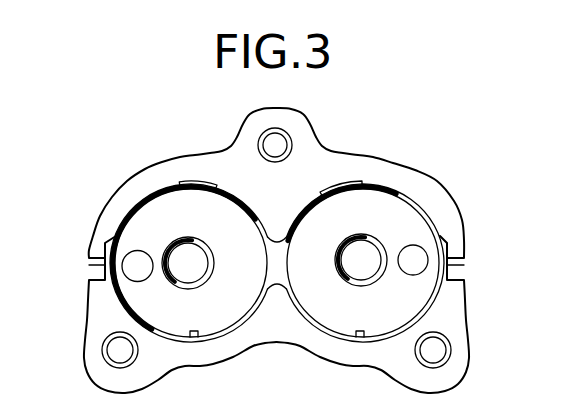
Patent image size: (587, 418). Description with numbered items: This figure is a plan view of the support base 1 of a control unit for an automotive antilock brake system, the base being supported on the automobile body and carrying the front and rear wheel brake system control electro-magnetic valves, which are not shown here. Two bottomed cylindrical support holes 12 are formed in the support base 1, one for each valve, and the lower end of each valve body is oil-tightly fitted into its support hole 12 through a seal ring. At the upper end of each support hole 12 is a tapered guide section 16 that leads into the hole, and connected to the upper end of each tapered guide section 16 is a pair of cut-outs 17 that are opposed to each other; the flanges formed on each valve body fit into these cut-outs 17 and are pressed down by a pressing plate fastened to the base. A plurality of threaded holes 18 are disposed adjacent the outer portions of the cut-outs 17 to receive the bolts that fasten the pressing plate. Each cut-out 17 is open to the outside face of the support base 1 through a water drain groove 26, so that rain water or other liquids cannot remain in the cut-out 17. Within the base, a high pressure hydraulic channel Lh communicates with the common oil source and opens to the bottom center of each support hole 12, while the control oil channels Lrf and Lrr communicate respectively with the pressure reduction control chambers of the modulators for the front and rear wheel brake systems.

The support base 1 is at (378, 165).
The support hole 12 is at (195, 338).
The tapered guide section 16 is at (252, 302).
The cut-out 17 is at (241, 198).
The threaded hole 18 is at (283, 137).
The water drain groove 26 is at (88, 270).
The high pressure hydraulic channel Lh is at (139, 255).
The control oil channel Lrr is at (192, 241).
The control oil channel Lrf is at (344, 243).